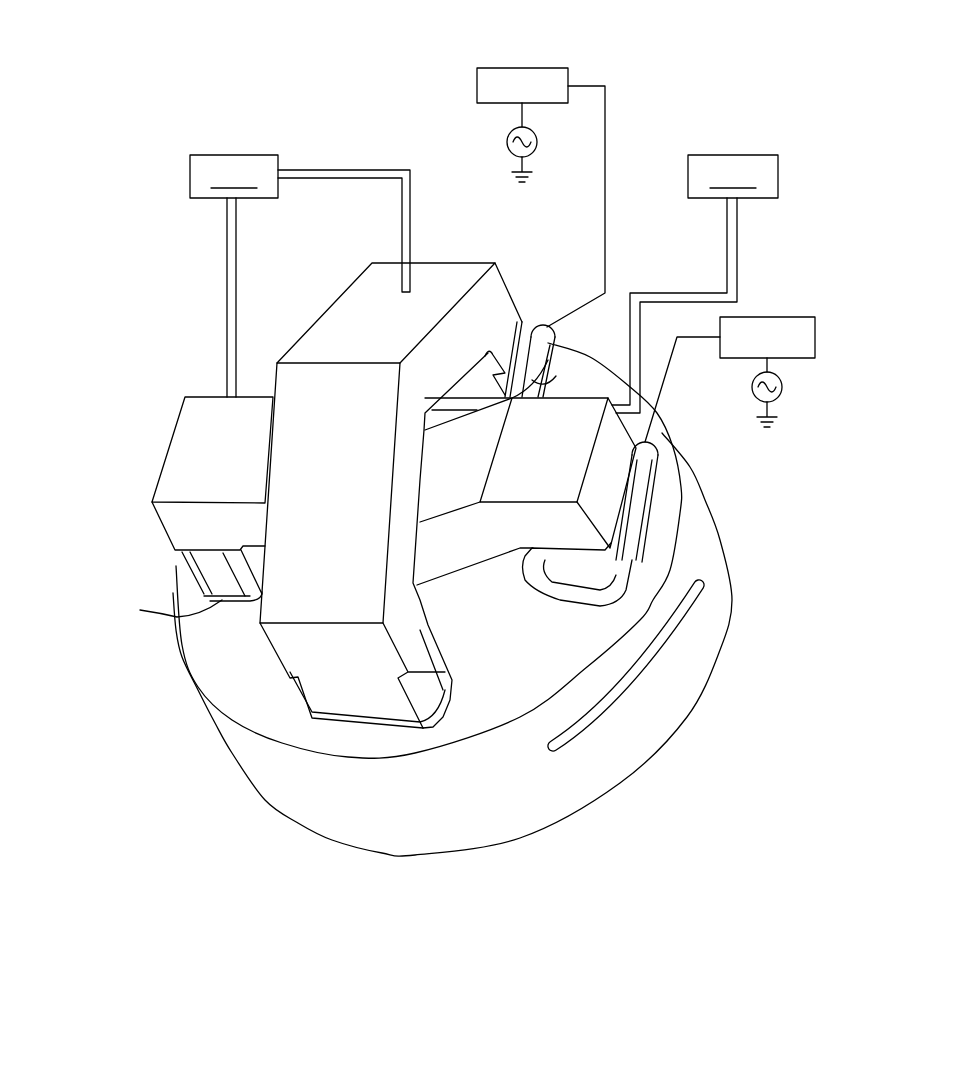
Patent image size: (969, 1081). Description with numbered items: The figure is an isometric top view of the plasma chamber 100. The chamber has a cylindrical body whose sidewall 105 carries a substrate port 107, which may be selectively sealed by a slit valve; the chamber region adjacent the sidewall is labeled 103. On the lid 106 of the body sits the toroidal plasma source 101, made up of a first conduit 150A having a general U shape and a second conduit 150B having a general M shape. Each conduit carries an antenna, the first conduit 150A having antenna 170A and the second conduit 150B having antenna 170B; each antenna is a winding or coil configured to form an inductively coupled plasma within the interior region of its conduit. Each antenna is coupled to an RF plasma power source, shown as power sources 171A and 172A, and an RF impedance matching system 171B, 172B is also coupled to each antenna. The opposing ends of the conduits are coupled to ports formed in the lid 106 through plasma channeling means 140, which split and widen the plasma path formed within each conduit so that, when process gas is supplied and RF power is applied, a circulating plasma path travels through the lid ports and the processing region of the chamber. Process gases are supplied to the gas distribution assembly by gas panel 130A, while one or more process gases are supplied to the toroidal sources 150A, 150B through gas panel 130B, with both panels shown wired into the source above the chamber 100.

The plasma chamber 100 is at (656, 116).
The toroidal plasma source 101 is at (615, 282).
The base 103 is at (750, 602).
The sidewall 105 is at (675, 707).
The lid 106 is at (668, 455).
The substrate port 107 is at (690, 634).
The gas panel 130A is at (695, 284).
The gas panel 130B is at (300, 276).
The plasma channeling means 140 is at (545, 392).
The first conduit 150A is at (440, 272).
The second conduit 150B is at (185, 467).
The antenna 170A is at (534, 334).
The antenna 170B is at (655, 478).
The RF plasma power source 171A is at (783, 389).
The RF impedance matching system 171B is at (768, 314).
The RF plasma power source 172A is at (506, 142).
The RF impedance matching system 172B is at (497, 58).